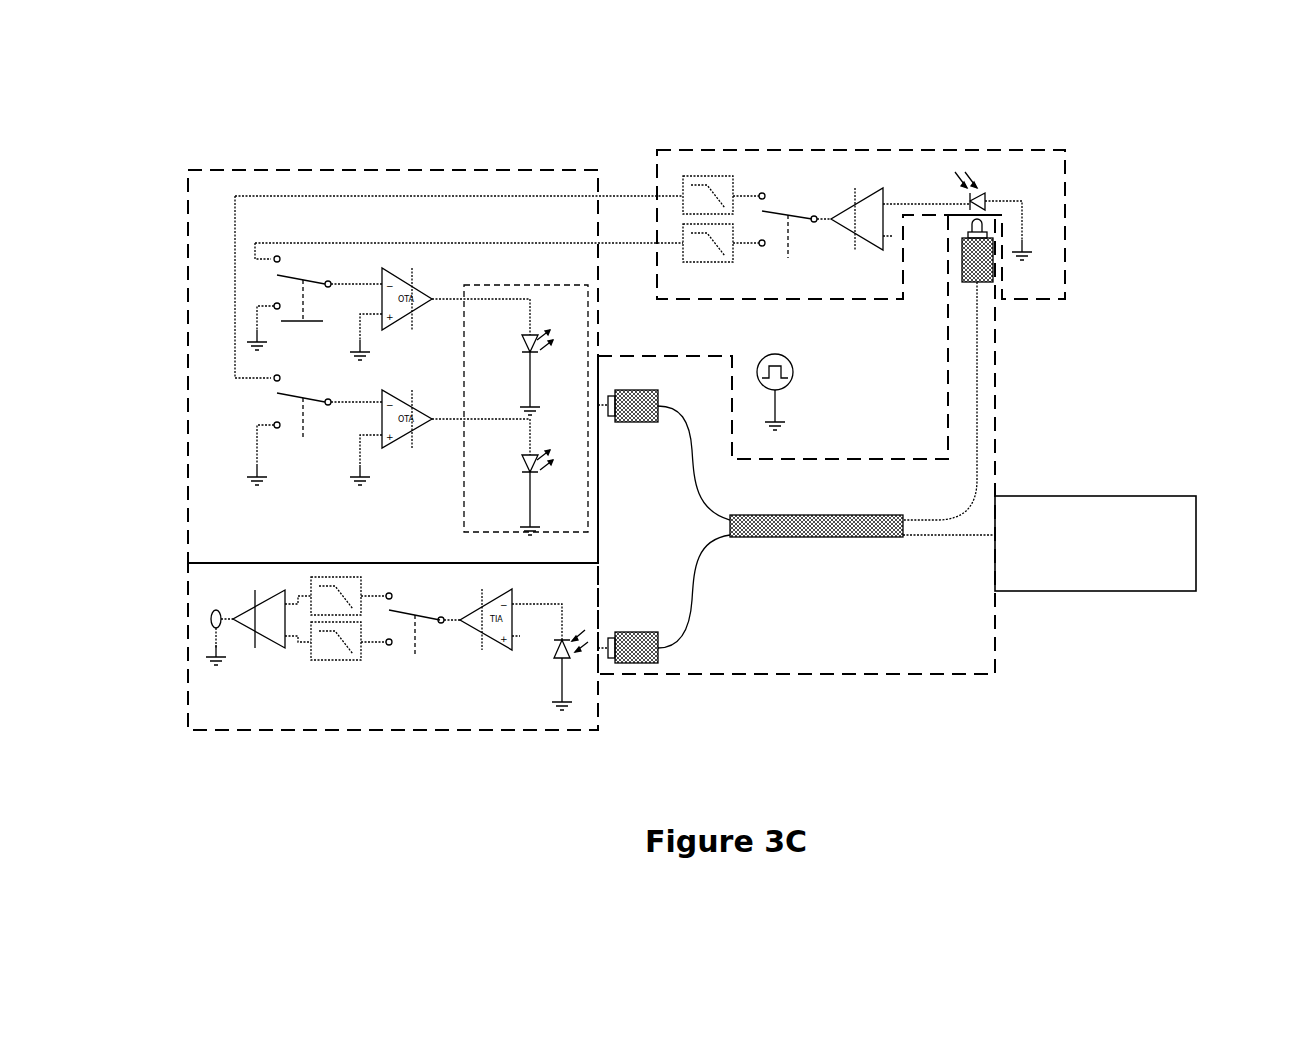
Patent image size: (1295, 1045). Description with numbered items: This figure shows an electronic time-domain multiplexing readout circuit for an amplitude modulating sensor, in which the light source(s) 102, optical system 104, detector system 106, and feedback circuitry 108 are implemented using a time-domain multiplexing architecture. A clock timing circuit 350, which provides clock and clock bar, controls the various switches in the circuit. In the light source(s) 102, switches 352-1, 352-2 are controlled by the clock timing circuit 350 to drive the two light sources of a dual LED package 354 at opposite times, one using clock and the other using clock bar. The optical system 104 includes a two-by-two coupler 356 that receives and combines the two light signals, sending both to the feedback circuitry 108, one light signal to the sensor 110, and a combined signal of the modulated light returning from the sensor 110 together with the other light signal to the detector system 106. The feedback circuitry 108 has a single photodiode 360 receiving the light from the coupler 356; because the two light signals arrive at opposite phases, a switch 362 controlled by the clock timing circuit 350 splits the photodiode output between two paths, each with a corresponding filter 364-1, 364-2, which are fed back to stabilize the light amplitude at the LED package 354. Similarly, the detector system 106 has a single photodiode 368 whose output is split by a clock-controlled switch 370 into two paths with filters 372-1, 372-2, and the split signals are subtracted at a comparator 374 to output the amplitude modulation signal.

The light source(s) 102 is at (188, 410).
The optical system 104 is at (995, 660).
The detector system 106 is at (188, 656).
The feedback circuitry 108 is at (1065, 168).
The sensor 110 is at (1196, 540).
The clock timing circuit 350 is at (795, 372).
The switch 352-1 is at (306, 282).
The switch 352-2 is at (275, 405).
The dual LED package 354 is at (540, 282).
The 2×2 coupler 356 is at (846, 538).
The photodiode 360 is at (985, 190).
The switch 362 is at (790, 212).
The filter 364-1 is at (707, 178).
The filter 364-2 is at (708, 262).
The photodiode 368 is at (560, 660).
The switch 370 is at (398, 606).
The filter 372-1 is at (335, 578).
The filter 372-2 is at (335, 662).
The comparator 374 is at (270, 645).